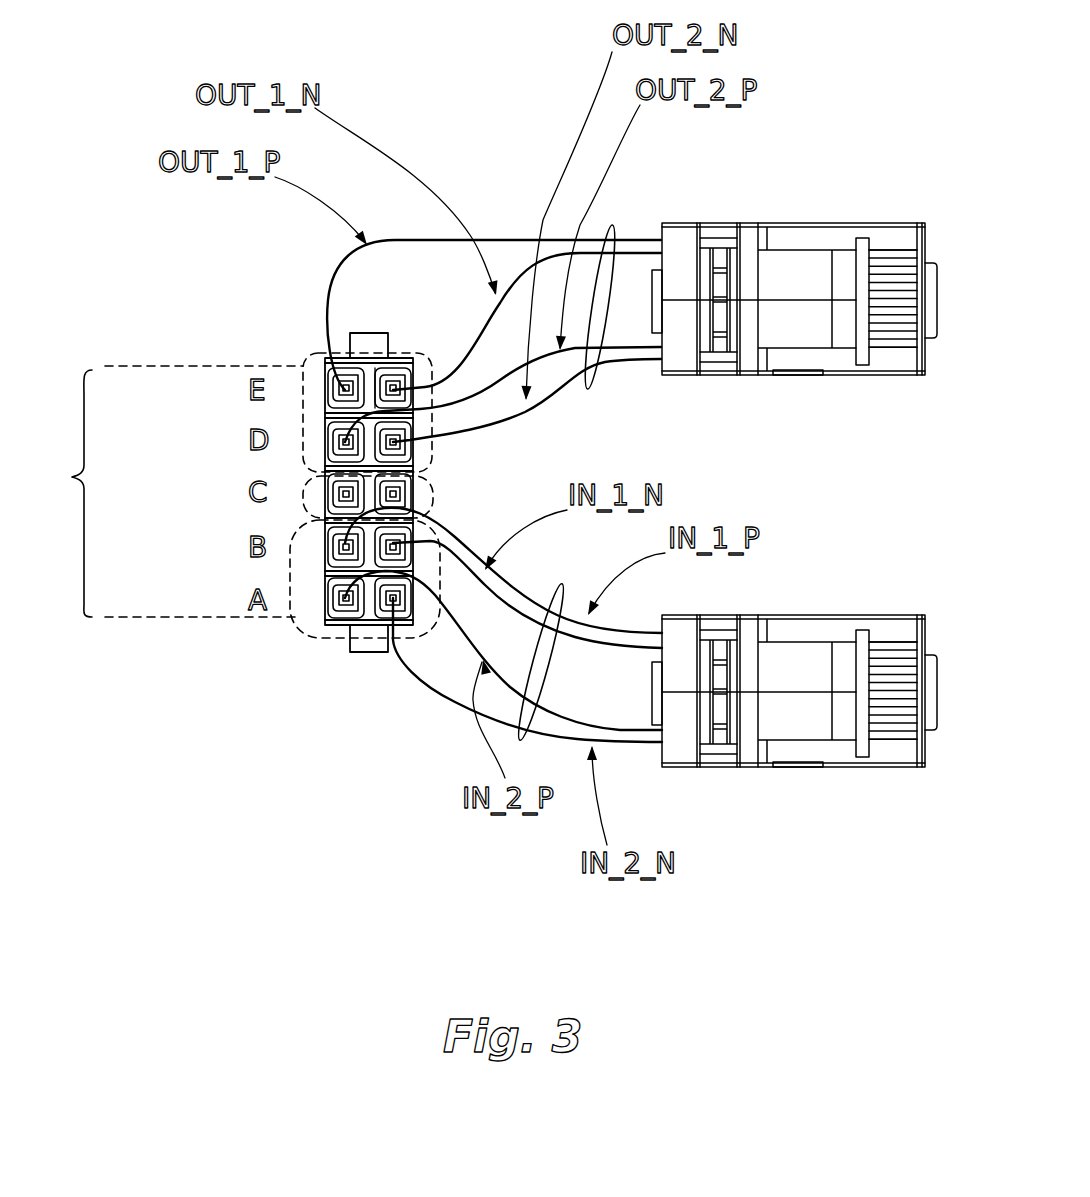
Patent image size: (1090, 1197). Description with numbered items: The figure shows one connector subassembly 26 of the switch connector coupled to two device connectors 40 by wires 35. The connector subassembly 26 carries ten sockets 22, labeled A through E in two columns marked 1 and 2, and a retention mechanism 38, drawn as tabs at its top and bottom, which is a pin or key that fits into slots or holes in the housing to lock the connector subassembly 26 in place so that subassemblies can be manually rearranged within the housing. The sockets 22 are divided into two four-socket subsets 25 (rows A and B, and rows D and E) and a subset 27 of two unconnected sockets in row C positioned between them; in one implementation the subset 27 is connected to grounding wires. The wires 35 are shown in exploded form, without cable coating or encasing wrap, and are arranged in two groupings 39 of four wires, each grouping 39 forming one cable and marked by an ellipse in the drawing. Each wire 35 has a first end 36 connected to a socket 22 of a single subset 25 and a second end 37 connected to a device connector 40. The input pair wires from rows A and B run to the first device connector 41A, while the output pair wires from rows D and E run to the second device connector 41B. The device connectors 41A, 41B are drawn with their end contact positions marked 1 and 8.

The sockets 22 is at (166, 491).
The subset of sockets 25 is at (304, 360).
The connector subassembly 26 is at (378, 725).
The subset of unconnected sockets 27 is at (303, 492).
The wires 35 is at (487, 173).
The first end 36 is at (345, 390).
The second end 37 is at (645, 238).
The retention mechanism 38 is at (373, 333).
The grouping of four wires 39 is at (614, 224).
The device connector 40 is at (794, 723).
The first device connector 41A is at (846, 613).
The second device connector 41B is at (832, 377).
The pin 1 / column 1 is at (640, 419).
The column 2 is at (396, 354).
The pin 8 is at (910, 573).